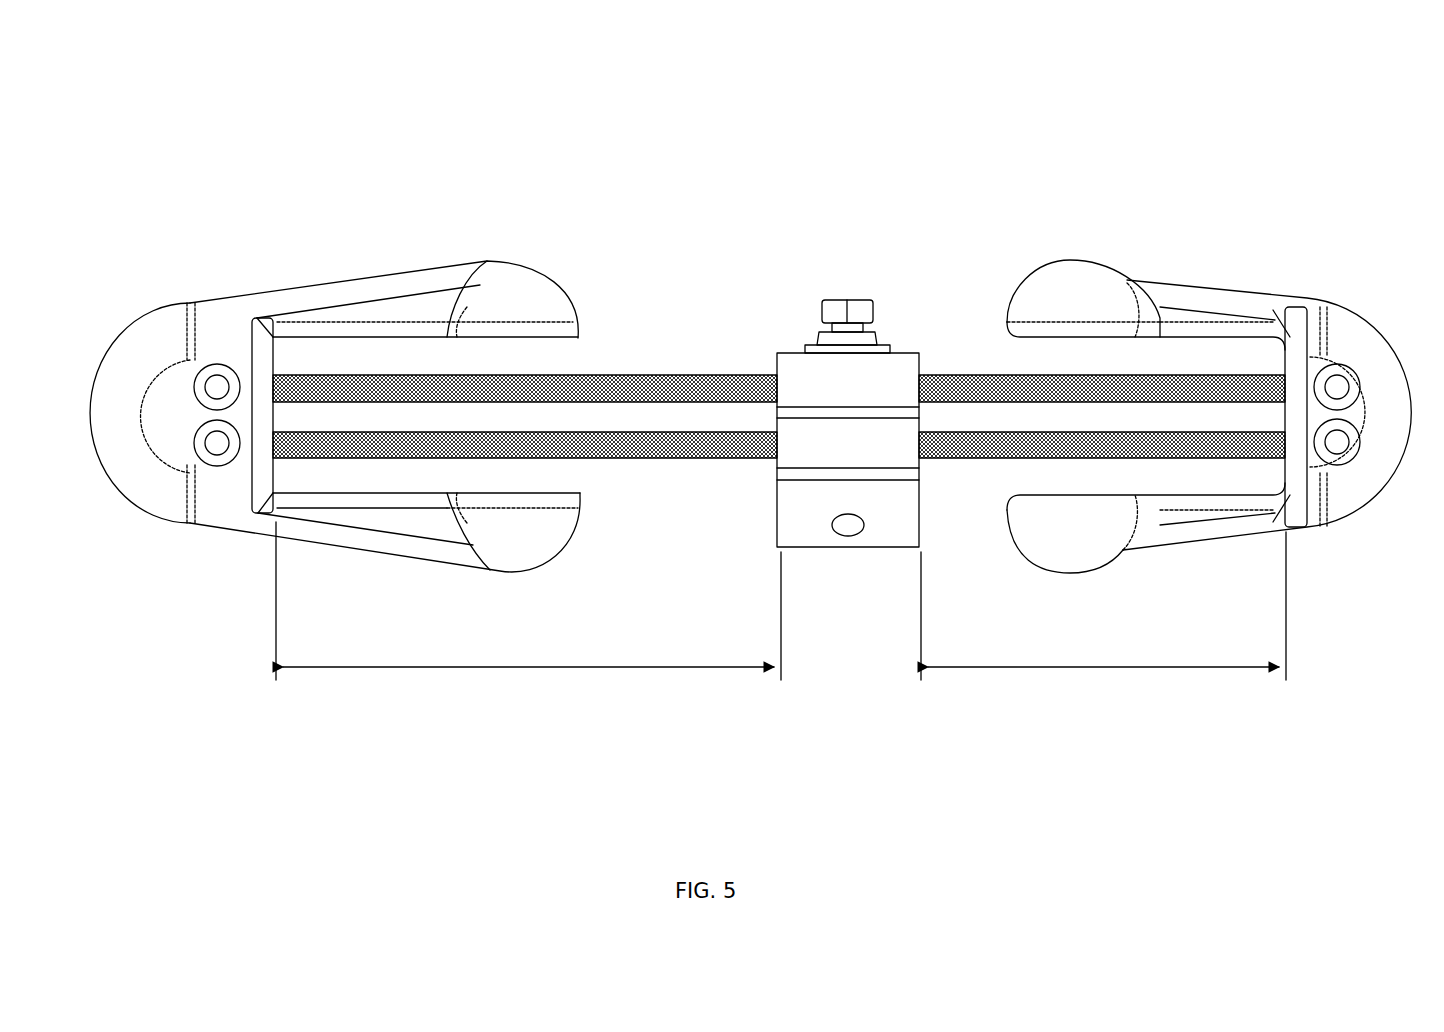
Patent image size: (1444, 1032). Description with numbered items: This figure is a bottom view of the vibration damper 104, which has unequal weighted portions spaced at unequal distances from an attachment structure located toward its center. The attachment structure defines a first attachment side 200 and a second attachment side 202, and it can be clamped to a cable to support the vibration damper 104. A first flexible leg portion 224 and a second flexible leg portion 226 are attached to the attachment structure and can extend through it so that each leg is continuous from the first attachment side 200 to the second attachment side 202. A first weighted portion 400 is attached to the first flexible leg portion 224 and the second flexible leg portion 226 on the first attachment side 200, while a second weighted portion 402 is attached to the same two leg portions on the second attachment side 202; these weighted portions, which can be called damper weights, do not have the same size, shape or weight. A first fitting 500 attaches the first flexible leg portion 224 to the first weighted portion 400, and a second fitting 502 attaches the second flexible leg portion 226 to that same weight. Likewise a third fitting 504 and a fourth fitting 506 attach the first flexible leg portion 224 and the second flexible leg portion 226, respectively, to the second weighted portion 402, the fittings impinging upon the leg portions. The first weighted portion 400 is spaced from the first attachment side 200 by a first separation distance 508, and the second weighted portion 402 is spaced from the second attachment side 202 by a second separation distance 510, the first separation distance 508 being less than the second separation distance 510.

The vibration damper 104 is at (864, 130).
The first attachment side 200 is at (928, 290).
The second attachment side 202 is at (758, 332).
The first flexible leg portion 224 is at (686, 458).
The second flexible leg portion 226 is at (671, 375).
The first weighted portion 400 is at (1252, 290).
The second weighted portion 402 is at (293, 285).
The first fitting 500 is at (1336, 455).
The second fitting 502 is at (1338, 380).
The third fitting 504 is at (216, 455).
The fourth fitting 506 is at (215, 380).
The first separation distance 508 is at (1093, 668).
The second separation distance 510 is at (530, 668).